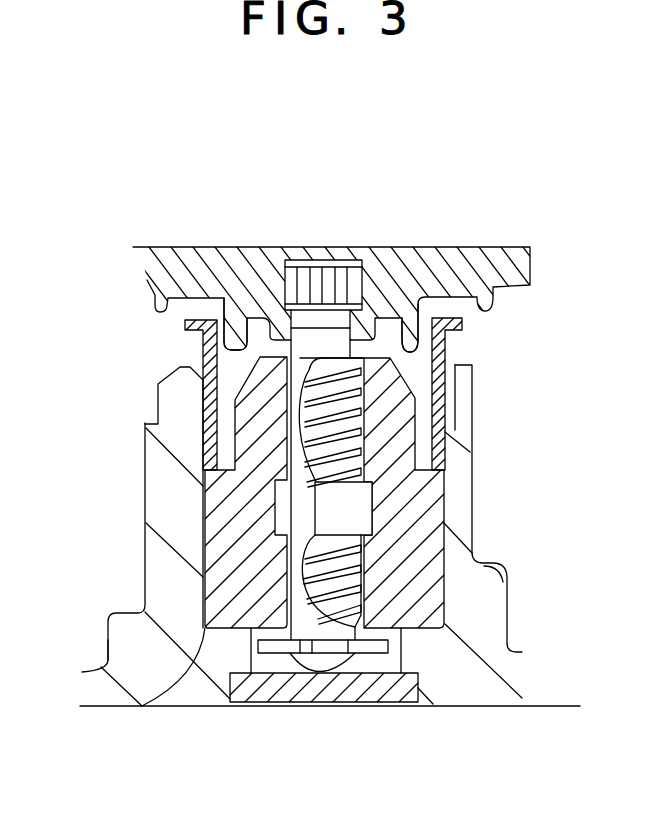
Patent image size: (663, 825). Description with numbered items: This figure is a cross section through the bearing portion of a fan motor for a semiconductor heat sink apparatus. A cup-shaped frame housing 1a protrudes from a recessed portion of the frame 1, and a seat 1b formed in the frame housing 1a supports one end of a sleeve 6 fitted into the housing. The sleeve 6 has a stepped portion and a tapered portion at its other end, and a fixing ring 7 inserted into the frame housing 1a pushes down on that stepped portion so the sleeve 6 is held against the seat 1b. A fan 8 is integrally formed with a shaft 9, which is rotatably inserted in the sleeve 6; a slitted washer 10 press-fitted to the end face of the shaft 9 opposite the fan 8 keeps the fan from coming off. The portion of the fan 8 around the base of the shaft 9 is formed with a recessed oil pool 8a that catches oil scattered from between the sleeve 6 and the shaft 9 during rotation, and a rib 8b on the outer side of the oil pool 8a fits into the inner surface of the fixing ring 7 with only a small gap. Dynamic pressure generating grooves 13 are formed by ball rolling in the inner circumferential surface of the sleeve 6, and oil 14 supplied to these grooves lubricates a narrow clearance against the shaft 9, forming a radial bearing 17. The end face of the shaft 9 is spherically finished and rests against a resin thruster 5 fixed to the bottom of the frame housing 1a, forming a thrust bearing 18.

The frame 1 is at (100, 698).
The frame housing 1a is at (157, 513).
The seat 1b is at (140, 707).
The thruster 5 is at (399, 707).
The sleeve 6 is at (432, 617).
The fixing ring 7 is at (480, 247).
The fan 8 is at (176, 259).
The oil pool 8a is at (237, 260).
The rib 8b is at (436, 248).
The shaft 9 is at (312, 625).
The washer 10 is at (273, 648).
The dynamic pressure generating grooves 13 is at (320, 260).
The oil 14 is at (194, 707).
The radial bearing 17 is at (335, 430).
The thrust bearing 18 is at (322, 652).